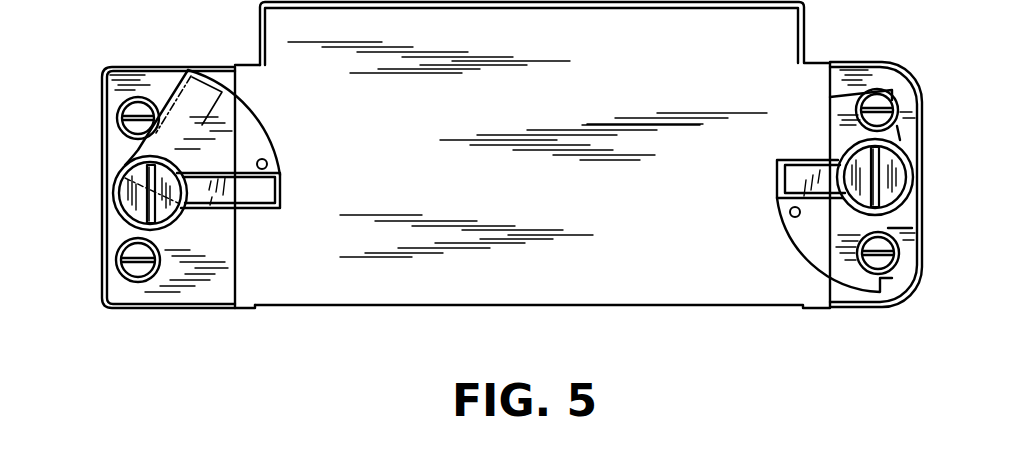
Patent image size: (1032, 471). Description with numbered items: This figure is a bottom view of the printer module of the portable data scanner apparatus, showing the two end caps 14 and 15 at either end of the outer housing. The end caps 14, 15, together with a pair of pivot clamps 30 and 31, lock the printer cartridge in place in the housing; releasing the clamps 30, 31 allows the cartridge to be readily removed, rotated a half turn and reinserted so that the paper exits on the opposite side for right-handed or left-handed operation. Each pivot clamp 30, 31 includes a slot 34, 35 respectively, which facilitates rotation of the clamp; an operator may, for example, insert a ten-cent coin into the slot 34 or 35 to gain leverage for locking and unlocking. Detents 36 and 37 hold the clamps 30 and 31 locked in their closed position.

The end cap 14 is at (908, 268).
The end cap 15 is at (107, 272).
The pivot clamp 30 is at (900, 168).
The pivot clamp 31 is at (118, 194).
The slot 34 is at (877, 158).
The slot 35 is at (147, 173).
The detent 36 is at (788, 213).
The detent 37 is at (267, 162).